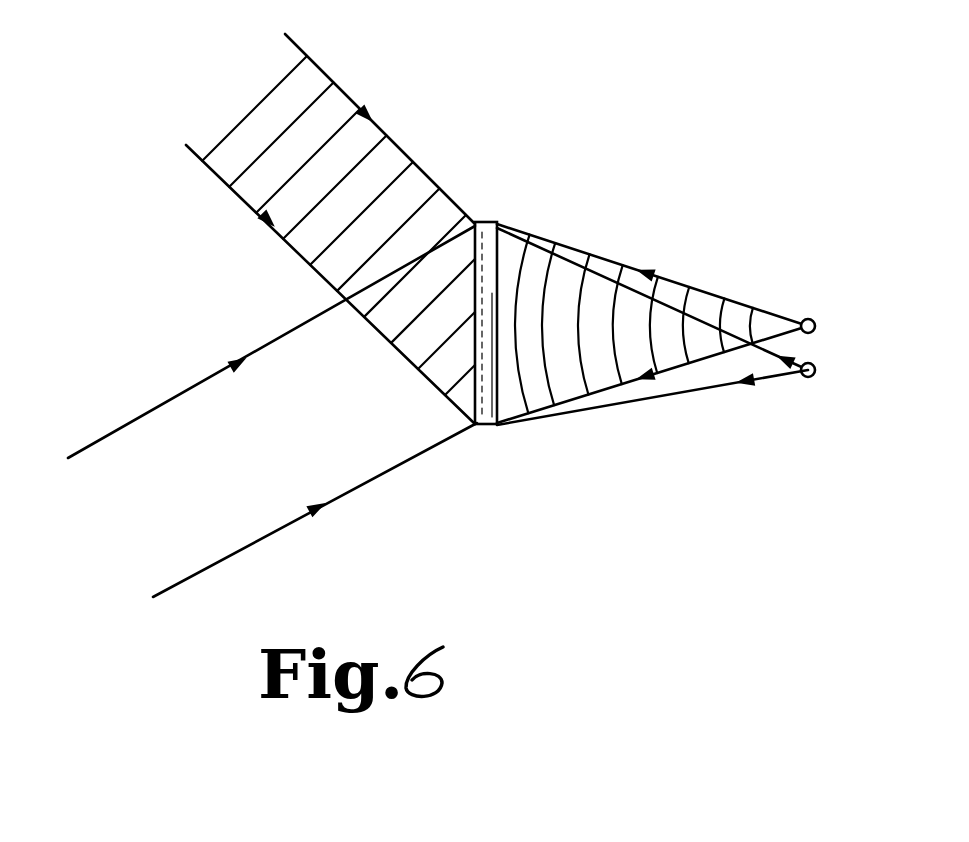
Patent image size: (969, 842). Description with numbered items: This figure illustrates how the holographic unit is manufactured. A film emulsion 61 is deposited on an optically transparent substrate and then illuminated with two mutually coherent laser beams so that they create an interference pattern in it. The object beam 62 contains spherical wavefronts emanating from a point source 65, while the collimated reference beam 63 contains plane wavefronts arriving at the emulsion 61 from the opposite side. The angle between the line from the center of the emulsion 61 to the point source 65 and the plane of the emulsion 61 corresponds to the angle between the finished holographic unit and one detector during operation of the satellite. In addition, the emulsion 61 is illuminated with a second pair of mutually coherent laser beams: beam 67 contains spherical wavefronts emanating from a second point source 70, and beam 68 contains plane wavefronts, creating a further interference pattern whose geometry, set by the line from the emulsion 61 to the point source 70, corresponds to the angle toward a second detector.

The film emulsion 61 is at (488, 222).
The object beam 62 is at (607, 240).
The collimated reference beam 63 is at (405, 133).
The point source 65 is at (808, 318).
The second object beam 67 is at (674, 404).
The second plane-wave beam 68 is at (276, 541).
The second point source 70 is at (816, 370).